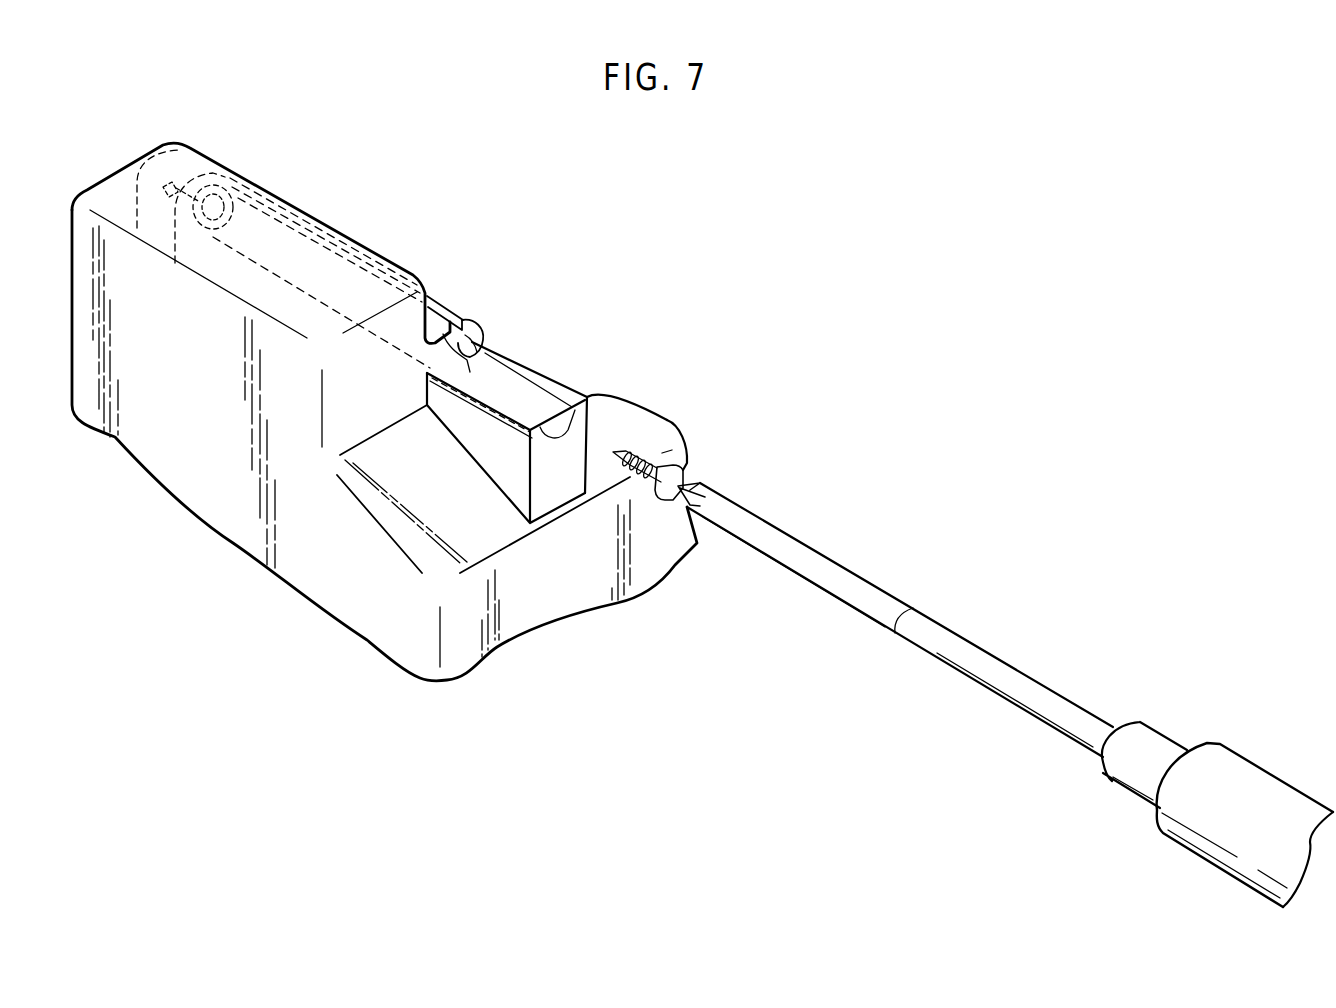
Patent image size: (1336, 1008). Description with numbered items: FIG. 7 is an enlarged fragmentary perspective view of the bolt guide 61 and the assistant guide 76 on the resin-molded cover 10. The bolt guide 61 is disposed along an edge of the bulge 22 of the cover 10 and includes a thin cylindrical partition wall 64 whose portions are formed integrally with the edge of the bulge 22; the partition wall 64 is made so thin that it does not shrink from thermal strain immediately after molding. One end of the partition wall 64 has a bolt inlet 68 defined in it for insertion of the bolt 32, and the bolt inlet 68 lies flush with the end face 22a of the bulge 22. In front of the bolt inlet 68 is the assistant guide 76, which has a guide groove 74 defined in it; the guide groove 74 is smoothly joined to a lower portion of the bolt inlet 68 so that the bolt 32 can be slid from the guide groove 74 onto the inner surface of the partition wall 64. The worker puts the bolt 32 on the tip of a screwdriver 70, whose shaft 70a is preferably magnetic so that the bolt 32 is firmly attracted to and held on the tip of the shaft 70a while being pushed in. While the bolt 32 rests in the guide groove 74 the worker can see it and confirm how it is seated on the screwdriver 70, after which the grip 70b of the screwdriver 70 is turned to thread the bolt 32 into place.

The resin-molded cover 10 is at (535, 190).
The bulge 22 is at (108, 188).
The end face 22a is at (360, 392).
The bolt 32 is at (655, 460).
The bolt guide 61 is at (341, 204).
The partition wall 64 is at (450, 302).
The bolt inlet 68 is at (495, 338).
The screwdriver 70 is at (1197, 695).
The shaft 70a is at (1068, 705).
The grip 70b is at (1273, 790).
The guide groove 74 is at (560, 417).
The assistant guide 76 is at (502, 440).